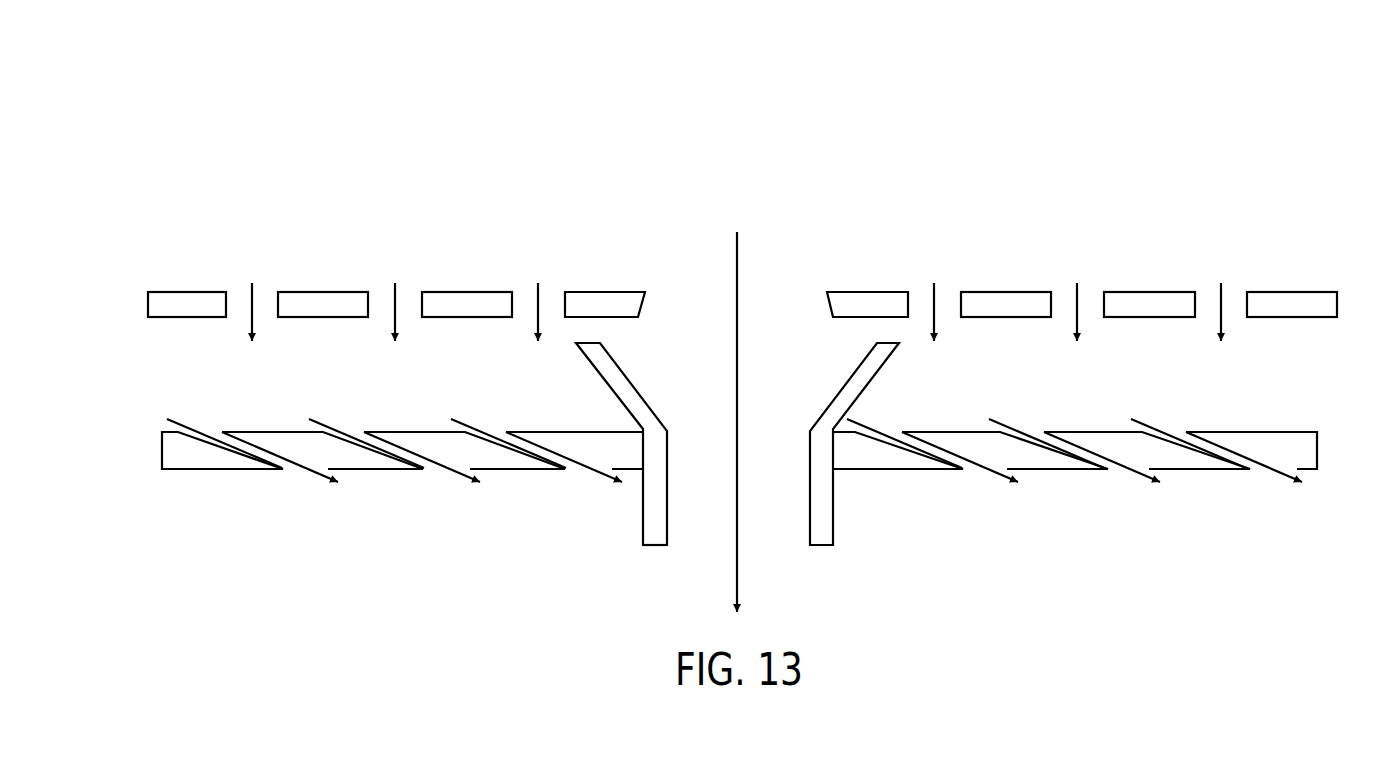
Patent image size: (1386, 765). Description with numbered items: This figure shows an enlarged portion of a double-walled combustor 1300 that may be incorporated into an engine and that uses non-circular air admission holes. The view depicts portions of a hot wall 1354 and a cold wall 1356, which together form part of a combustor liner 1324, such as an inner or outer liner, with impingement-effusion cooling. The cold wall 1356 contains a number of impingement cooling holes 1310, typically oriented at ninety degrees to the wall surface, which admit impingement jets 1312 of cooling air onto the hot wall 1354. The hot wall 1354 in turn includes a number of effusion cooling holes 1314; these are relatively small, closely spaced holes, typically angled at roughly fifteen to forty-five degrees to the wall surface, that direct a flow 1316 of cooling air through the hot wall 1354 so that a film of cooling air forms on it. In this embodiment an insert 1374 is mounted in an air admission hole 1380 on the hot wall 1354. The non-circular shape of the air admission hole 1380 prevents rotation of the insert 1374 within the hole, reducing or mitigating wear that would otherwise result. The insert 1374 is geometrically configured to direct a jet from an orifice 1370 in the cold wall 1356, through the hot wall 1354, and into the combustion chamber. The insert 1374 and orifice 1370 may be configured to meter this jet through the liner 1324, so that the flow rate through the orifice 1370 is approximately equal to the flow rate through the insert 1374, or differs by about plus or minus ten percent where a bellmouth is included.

The double-walled combustor 1300 is at (988, 165).
The impingement cooling holes 1310 is at (407, 298).
The impingement jets 1312 is at (252, 290).
The effusion cooling holes 1314 is at (222, 431).
The flow of cooling air 1316 is at (190, 426).
The combustor liner 1324 is at (1215, 490).
The hot wall 1354 is at (918, 472).
The cold wall 1356 is at (1003, 290).
The orifice 1370 is at (688, 303).
The insert 1374 is at (638, 537).
The air admission hole 1380 is at (702, 478).